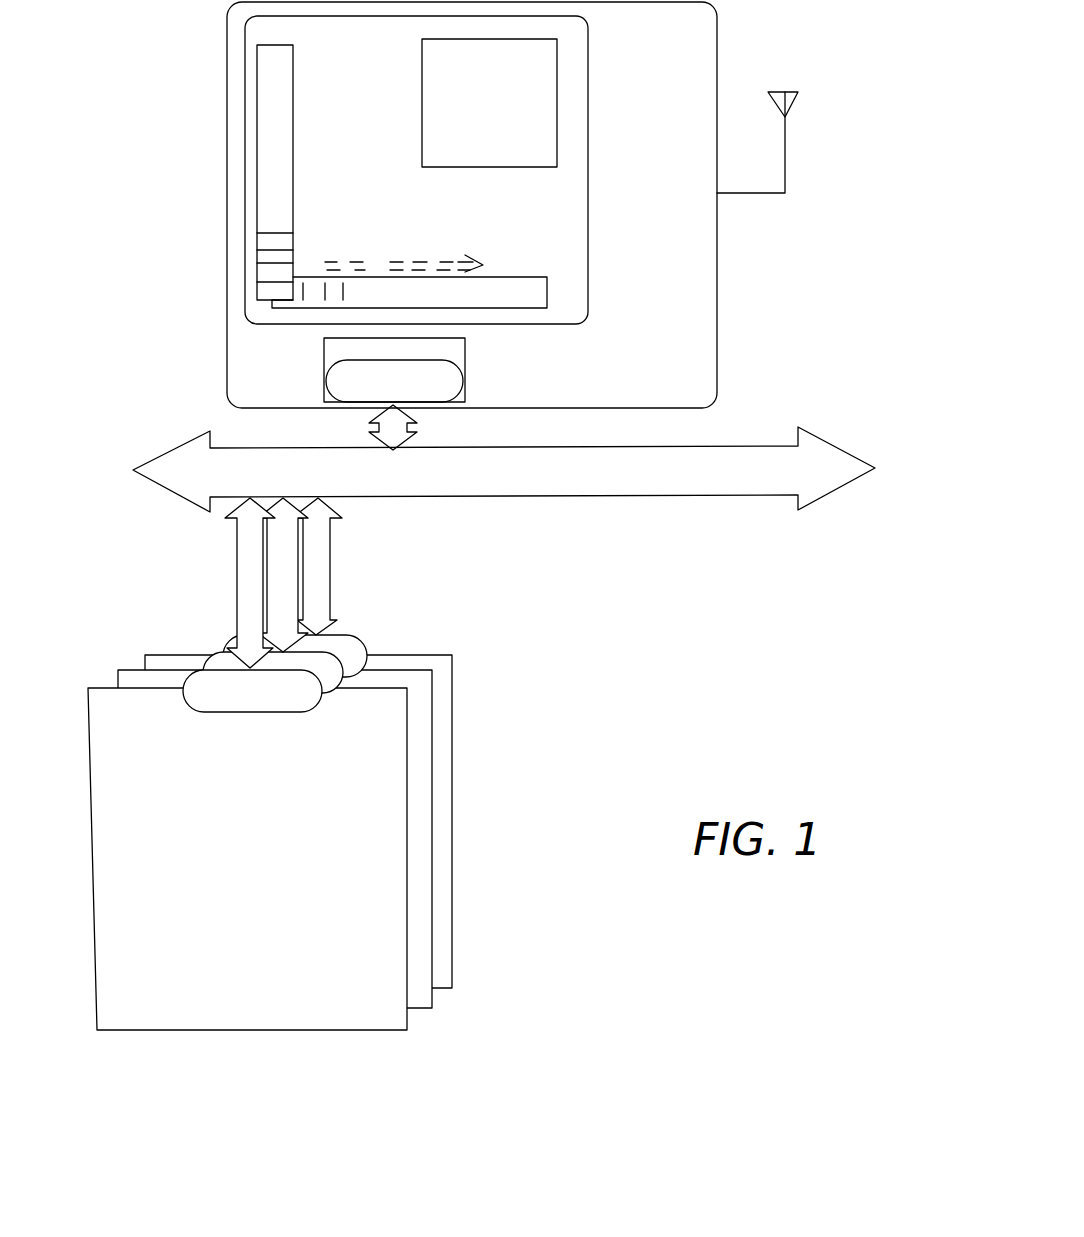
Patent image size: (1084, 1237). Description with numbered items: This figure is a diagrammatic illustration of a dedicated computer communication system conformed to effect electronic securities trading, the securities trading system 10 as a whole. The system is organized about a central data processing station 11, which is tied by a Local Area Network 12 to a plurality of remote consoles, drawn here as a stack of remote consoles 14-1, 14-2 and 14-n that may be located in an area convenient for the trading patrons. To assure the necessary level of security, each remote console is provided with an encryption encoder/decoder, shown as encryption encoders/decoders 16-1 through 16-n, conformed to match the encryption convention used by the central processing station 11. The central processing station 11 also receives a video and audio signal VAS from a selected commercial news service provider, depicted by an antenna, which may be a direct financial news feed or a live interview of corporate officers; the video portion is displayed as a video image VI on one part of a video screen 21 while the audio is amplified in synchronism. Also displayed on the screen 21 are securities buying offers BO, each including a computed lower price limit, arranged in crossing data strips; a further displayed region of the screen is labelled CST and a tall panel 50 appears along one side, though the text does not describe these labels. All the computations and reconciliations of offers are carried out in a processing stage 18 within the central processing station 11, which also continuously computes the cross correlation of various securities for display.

The securities trading system 10 is at (642, 627).
The central data processing station 11 is at (717, 260).
The video screen 21 is at (570, 218).
The vertical panel 50 is at (278, 172).
The video image VI is at (535, 120).
The status bar CST is at (458, 270).
The buying offers BO is at (373, 283).
The processing stage 18 is at (458, 348).
The video and audio signal VAS is at (803, 97).
The Local Area Network 12 is at (667, 488).
The remote console 14-n is at (445, 847).
The remote console 14-2 is at (433, 957).
The remote console 14-1 is at (360, 1023).
The encryption encoder/decoder 16-n is at (345, 642).
The encryption encoder/decoder 16-1 is at (203, 703).